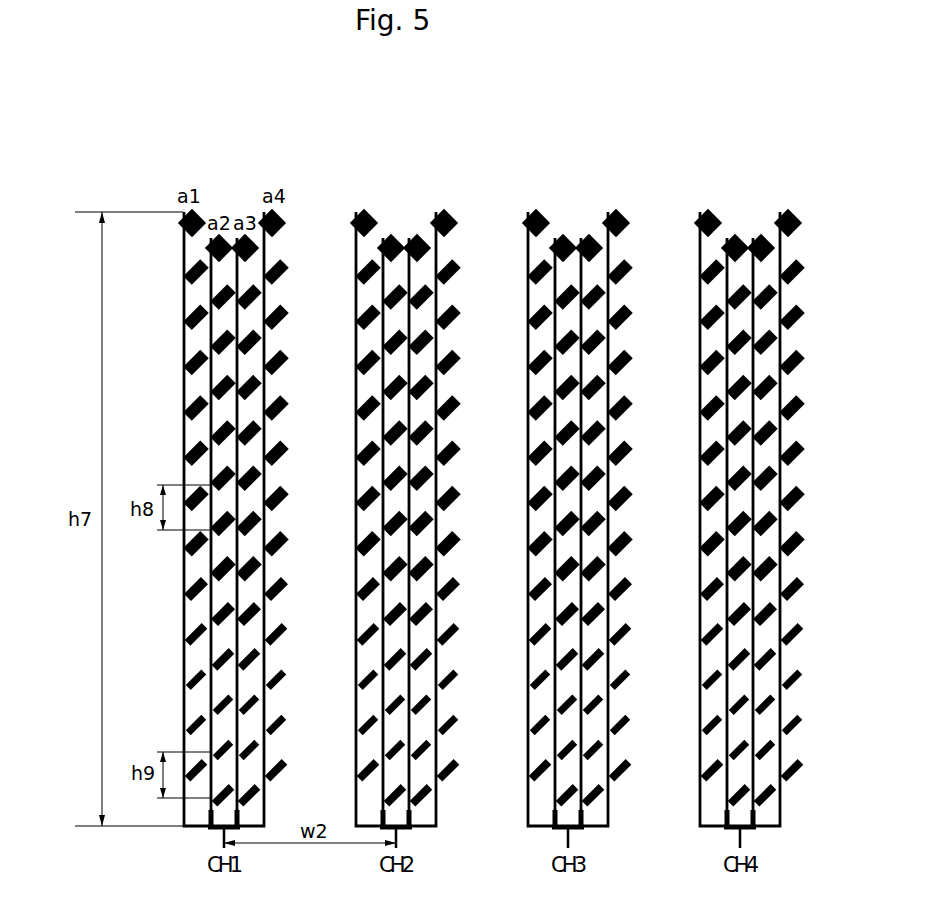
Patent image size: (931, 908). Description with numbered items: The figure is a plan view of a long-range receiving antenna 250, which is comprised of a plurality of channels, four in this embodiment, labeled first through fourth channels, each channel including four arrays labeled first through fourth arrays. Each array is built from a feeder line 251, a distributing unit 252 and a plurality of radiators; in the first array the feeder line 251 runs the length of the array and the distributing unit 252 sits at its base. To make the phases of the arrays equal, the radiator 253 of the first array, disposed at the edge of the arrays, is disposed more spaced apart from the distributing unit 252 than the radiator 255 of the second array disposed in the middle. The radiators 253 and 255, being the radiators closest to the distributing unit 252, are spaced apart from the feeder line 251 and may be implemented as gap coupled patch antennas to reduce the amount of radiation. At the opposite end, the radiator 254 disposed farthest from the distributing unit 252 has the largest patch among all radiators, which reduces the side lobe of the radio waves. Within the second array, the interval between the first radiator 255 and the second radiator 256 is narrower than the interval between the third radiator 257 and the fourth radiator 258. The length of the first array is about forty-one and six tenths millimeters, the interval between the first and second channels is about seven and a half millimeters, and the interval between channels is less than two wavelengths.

The long-range receiving antenna 250 is at (172, 101).
The feeder line 251 is at (183, 812).
The distributing unit 252 is at (210, 832).
The radiator 253 is at (197, 762).
The radiator 254 is at (202, 217).
The first radiator 255 is at (233, 787).
The second radiator 256 is at (228, 745).
The third radiator 257 is at (226, 516).
The fourth radiator 258 is at (224, 474).